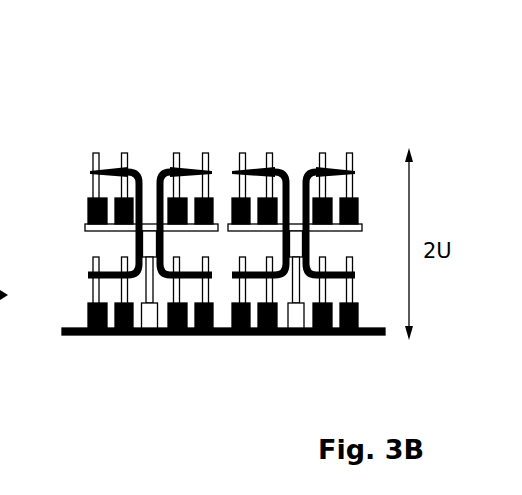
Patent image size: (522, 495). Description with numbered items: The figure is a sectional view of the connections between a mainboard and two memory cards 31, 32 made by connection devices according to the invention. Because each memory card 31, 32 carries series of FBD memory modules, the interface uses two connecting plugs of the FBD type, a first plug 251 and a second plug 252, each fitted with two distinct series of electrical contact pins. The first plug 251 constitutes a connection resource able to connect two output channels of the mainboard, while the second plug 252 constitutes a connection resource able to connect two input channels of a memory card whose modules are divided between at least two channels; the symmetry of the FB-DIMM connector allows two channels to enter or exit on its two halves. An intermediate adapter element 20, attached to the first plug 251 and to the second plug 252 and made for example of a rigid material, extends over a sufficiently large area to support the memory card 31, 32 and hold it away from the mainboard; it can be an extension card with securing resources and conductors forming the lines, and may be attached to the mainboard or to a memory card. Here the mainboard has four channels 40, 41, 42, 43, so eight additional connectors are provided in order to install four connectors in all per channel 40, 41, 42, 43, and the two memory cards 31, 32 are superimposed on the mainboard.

The intermediate adapter element 20 is at (143, 284).
The memory card 31 is at (84, 222).
The memory card 32 is at (365, 222).
The channel 40 is at (331, 170).
The channel 41 is at (281, 168).
The channel 42 is at (137, 170).
The channel 43 is at (187, 168).
The first plug 251 is at (152, 304).
The second plug 252 is at (140, 258).